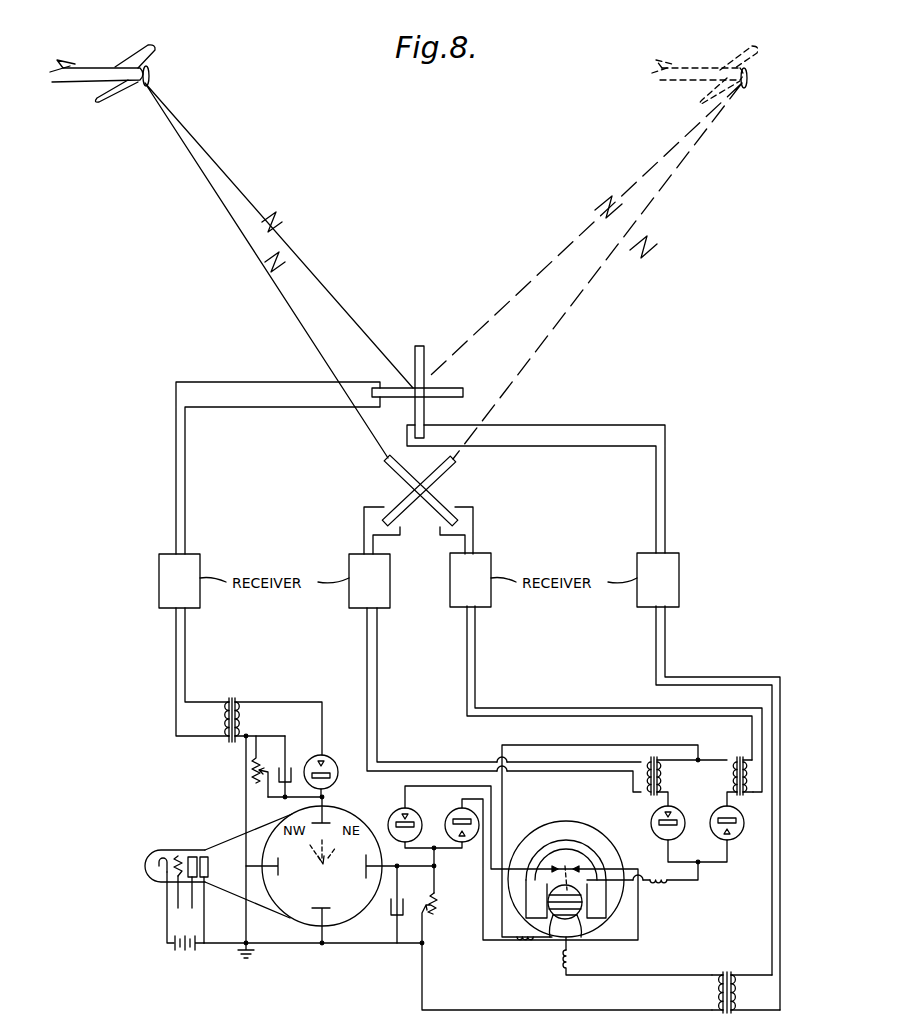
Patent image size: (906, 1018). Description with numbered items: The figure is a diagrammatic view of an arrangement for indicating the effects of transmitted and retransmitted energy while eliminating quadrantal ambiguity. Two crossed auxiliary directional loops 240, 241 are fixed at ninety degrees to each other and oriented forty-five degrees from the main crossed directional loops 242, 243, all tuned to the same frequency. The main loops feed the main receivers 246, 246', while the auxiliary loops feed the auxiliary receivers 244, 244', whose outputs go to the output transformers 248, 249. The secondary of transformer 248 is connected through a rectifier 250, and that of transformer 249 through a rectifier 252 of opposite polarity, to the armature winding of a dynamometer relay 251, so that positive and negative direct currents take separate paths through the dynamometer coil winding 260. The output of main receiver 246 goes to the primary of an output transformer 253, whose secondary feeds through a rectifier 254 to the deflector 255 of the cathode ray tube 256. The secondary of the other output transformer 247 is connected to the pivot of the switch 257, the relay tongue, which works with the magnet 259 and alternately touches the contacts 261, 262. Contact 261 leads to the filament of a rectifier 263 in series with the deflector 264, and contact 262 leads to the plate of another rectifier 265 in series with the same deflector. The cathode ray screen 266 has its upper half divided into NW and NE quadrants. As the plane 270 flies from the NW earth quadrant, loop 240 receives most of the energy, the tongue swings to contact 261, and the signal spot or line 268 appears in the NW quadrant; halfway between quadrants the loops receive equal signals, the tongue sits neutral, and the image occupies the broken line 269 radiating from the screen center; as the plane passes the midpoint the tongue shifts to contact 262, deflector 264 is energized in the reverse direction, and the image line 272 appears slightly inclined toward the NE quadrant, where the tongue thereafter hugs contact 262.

The auxiliary directional loop 240 is at (396, 481).
The auxiliary directional loop 241 is at (444, 480).
The main directional loop 242 is at (406, 400).
The main directional loop 243 is at (418, 346).
The auxiliary receiver 244 is at (369, 581).
The auxiliary receiver 244' is at (470, 580).
The main receiver 246 is at (179, 581).
The main receiver 246' is at (658, 580).
The output transformer 247 is at (712, 988).
The output transformer 248 is at (645, 784).
The output transformer 249 is at (738, 762).
The rectifier 250 is at (676, 840).
The dynamometer relay 251 is at (600, 917).
The rectifier 252 is at (710, 813).
The output transformer 253 is at (233, 740).
The rectifier 254 is at (323, 757).
The deflector 255 is at (325, 814).
The cathode ray tube 256 is at (267, 905).
The relay tongue 257 is at (568, 860).
The magnet 259 is at (598, 860).
The dynamometer coil winding 260 is at (577, 918).
The contact 261 is at (557, 868).
The contact 262 is at (574, 868).
The rectifier 263 is at (400, 812).
The deflector 264 is at (363, 879).
The rectifier 265 is at (453, 813).
The cathode ray screen 266 is at (332, 918).
The signal spot or line 268 is at (280, 867).
The broken line 269 is at (320, 843).
The plane 270 is at (104, 92).
The image line 272 is at (331, 865).